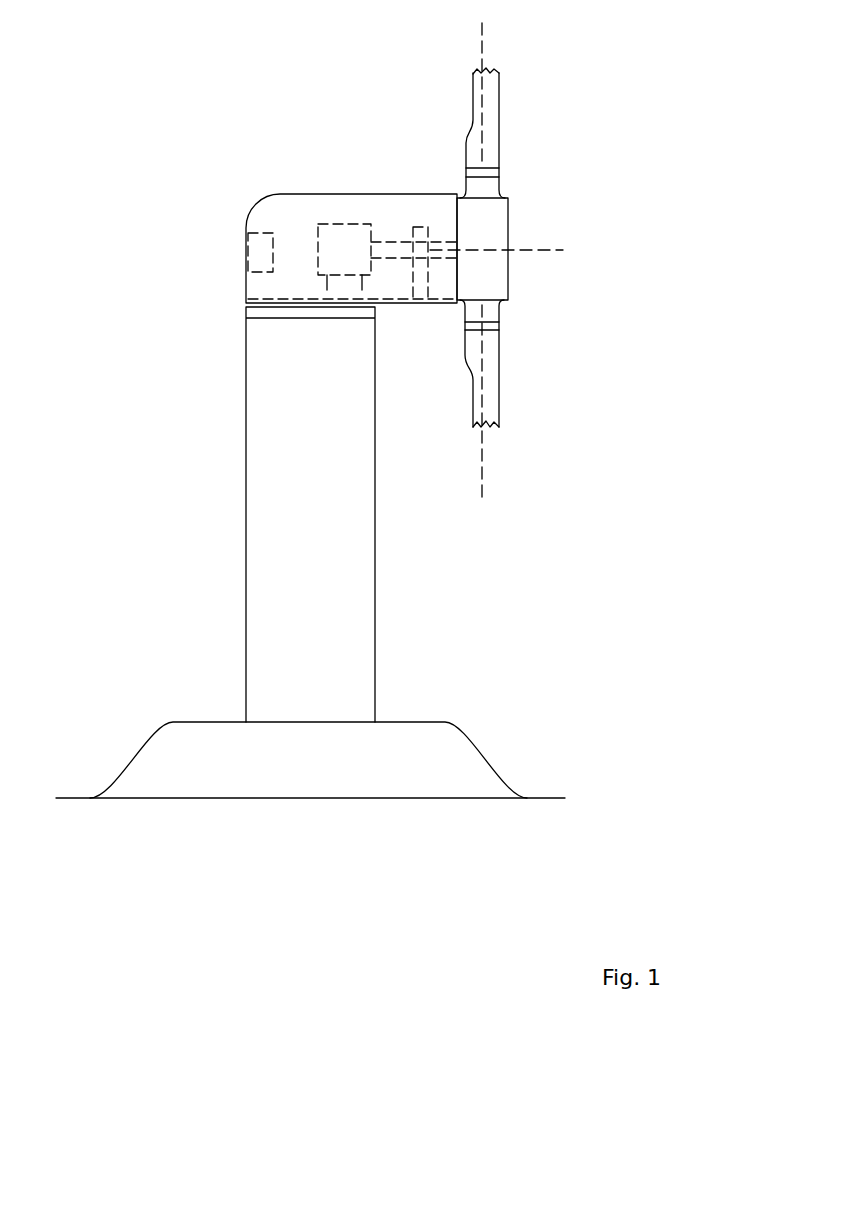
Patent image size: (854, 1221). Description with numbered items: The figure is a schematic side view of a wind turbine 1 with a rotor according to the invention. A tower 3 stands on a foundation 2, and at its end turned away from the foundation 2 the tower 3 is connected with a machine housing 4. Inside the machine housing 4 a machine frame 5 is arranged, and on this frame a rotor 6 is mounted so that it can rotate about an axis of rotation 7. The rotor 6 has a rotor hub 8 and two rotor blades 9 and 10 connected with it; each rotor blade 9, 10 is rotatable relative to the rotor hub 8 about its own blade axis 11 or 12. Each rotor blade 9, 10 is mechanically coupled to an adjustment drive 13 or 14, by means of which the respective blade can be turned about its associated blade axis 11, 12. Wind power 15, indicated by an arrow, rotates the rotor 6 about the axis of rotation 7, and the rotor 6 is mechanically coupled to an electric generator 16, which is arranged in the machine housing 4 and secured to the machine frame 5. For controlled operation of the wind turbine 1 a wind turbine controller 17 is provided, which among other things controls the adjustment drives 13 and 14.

The wind turbine 1 is at (117, 69).
The foundation 2 is at (143, 752).
The tower 3 is at (250, 543).
The machine housing 4 is at (296, 194).
The machine frame 5 is at (258, 296).
The rotor 6 is at (528, 204).
The axis of rotation 7 is at (563, 250).
The rotor hub 8 is at (508, 285).
The rotor blade 9 is at (497, 388).
The rotor blade 10 is at (473, 98).
The blade axis 11 is at (482, 467).
The blade axis 12 is at (480, 33).
The adjustment drive 13 is at (495, 328).
The adjustment drive 14 is at (466, 172).
The wind power 15 is at (672, 124).
The electric generator 16 is at (330, 224).
The wind turbine controller 17 is at (259, 232).